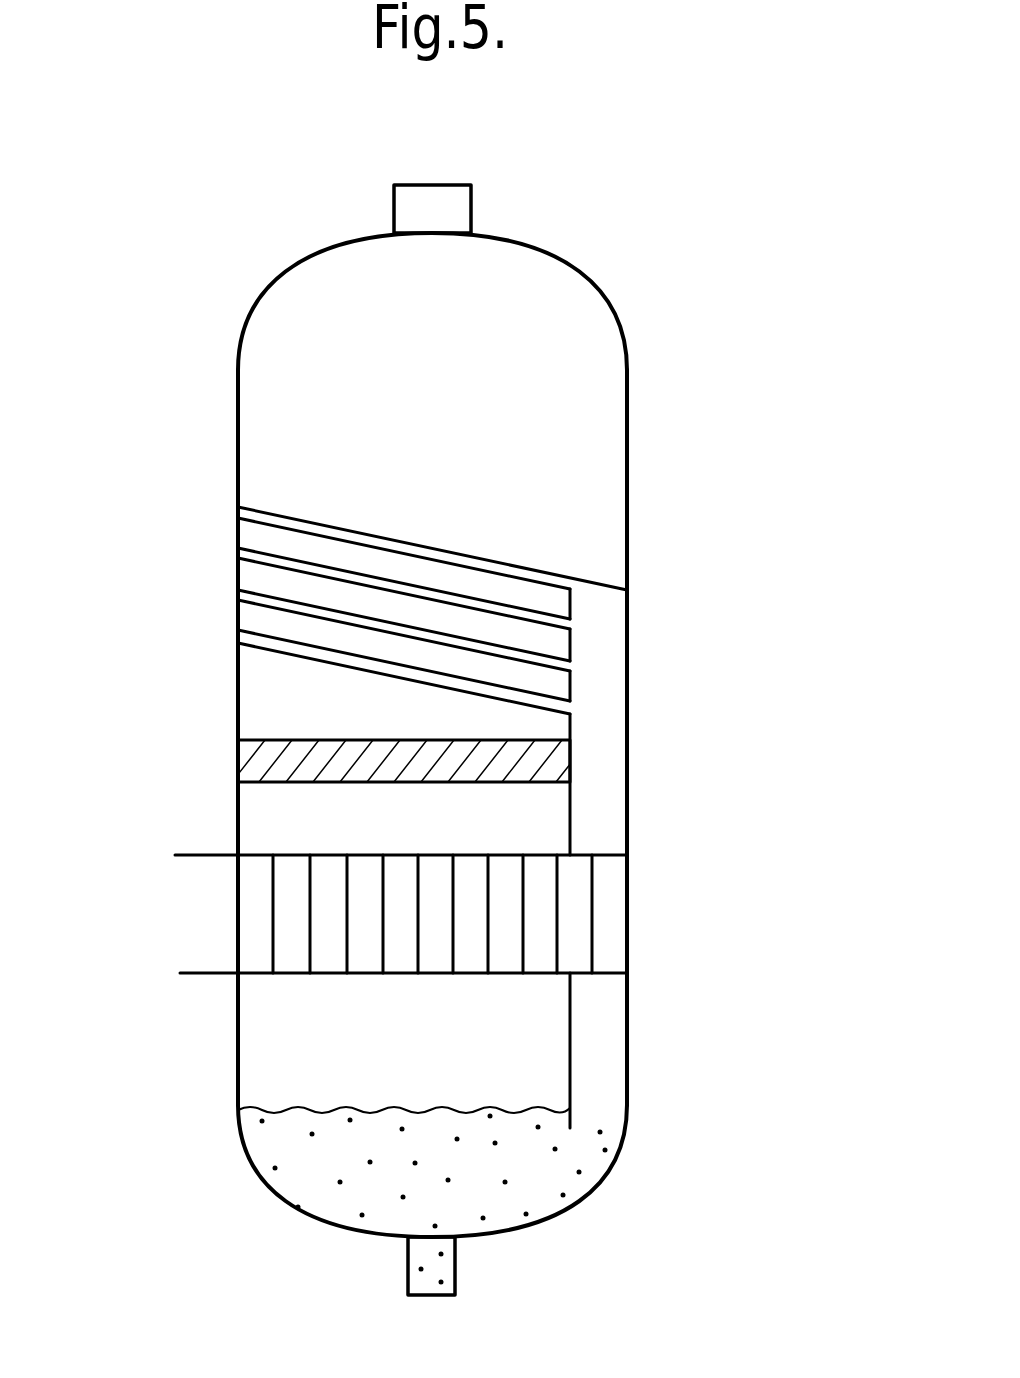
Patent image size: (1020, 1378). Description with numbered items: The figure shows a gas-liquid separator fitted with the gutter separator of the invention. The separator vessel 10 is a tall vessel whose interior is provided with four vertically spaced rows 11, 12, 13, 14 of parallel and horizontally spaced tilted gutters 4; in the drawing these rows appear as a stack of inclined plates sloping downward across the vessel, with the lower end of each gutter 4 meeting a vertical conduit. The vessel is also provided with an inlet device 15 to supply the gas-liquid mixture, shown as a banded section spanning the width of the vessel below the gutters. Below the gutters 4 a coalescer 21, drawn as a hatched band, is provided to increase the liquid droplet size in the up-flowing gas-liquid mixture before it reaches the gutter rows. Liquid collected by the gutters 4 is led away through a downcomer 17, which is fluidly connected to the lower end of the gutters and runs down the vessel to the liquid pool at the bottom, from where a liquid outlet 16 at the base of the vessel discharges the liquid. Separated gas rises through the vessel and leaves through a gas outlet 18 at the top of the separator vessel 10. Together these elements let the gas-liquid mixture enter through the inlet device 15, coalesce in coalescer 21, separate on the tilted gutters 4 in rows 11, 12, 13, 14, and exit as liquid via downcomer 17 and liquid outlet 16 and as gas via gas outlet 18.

The separator vessel 10 is at (630, 345).
The gas outlet 18 is at (463, 215).
The row of tilted gutters 14 is at (238, 515).
The row of tilted gutters 13 is at (238, 554).
The row of tilted gutters 12 is at (238, 600).
The row of tilted gutters 11 is at (238, 642).
The tilted gutter 4 is at (570, 640).
The coalescer 21 is at (238, 764).
The downcomer 17 is at (588, 822).
The inlet device 15 is at (238, 910).
The liquid outlet 16 is at (455, 1283).